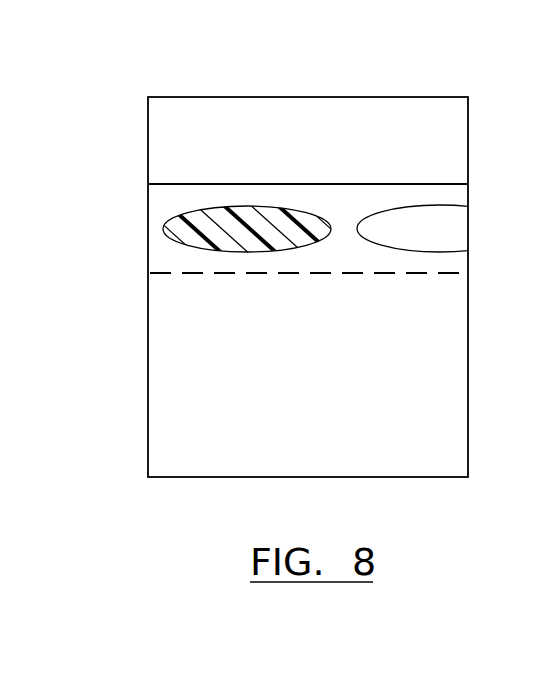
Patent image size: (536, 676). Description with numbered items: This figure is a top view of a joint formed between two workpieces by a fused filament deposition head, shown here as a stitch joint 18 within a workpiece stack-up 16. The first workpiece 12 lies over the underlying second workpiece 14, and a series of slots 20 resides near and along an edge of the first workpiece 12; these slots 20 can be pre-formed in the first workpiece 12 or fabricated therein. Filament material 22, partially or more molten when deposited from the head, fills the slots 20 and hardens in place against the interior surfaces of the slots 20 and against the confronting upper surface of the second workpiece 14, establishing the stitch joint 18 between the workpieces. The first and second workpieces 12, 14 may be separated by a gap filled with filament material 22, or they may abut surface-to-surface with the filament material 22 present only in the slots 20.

The first workpiece 12 is at (422, 442).
The second workpiece 14 is at (431, 130).
The workpiece stack-up 16 is at (148, 273).
The stitch joint 18 is at (470, 228).
The slots 20 is at (249, 206).
The filament material 22 is at (220, 220).